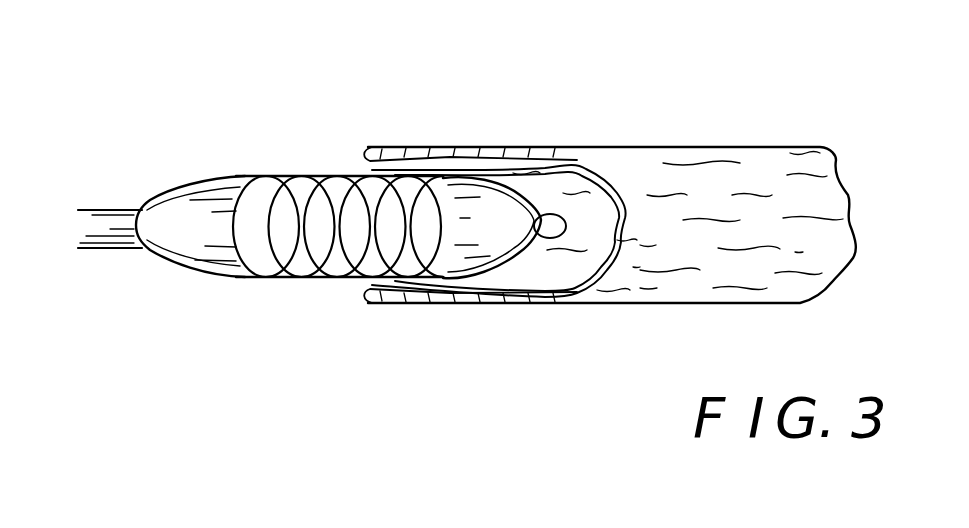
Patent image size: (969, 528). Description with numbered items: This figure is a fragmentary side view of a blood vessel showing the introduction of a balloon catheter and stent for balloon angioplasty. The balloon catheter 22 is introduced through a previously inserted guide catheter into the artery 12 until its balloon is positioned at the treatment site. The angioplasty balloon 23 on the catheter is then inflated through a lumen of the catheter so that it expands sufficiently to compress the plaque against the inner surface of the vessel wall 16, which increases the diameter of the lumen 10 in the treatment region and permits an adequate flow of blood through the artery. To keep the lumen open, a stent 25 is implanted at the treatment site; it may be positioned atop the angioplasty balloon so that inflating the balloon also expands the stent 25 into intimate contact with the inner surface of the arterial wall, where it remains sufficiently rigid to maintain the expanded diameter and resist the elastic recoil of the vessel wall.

The lumen 10 is at (578, 260).
The artery 12 is at (681, 127).
The vessel wall 16 is at (592, 147).
The balloon catheter 22 is at (318, 160).
The angioplasty balloon 23 is at (186, 202).
The stent 25 is at (313, 280).